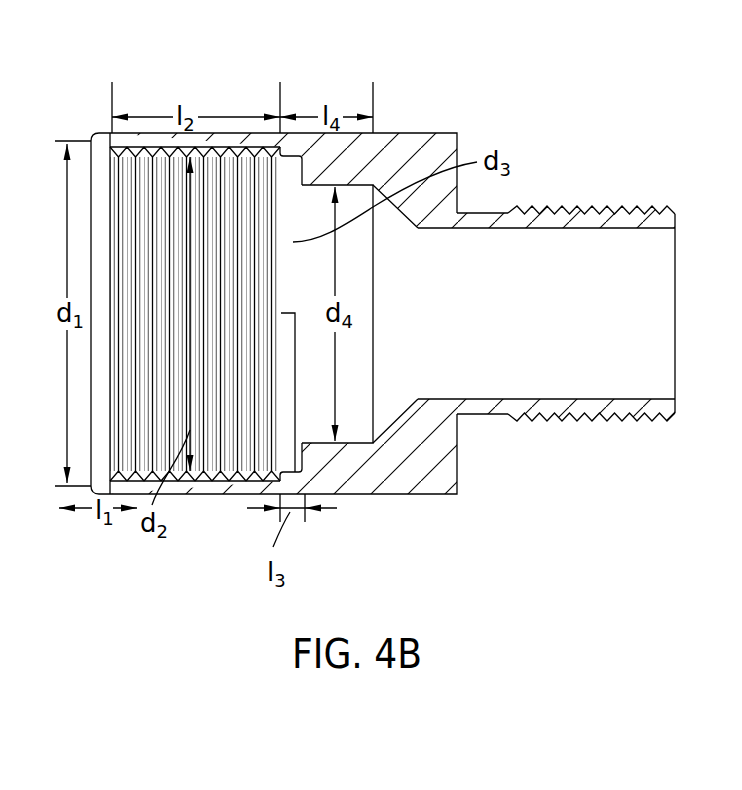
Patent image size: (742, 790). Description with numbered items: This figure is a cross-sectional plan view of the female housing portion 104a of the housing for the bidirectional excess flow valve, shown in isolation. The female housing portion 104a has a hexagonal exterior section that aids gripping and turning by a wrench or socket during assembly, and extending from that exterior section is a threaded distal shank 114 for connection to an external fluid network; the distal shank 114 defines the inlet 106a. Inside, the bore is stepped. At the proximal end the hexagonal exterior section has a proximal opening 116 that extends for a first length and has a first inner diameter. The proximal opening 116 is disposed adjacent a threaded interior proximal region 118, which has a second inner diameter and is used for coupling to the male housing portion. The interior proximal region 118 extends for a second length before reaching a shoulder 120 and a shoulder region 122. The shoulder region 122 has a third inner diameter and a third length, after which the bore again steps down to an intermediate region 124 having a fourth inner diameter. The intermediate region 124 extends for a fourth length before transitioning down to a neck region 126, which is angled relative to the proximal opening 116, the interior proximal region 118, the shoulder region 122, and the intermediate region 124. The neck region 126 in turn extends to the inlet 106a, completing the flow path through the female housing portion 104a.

The female housing portion 104a is at (408, 97).
The inlet 106a is at (675, 328).
The threaded distal shank 114 is at (567, 208).
The proximal opening 116 is at (92, 487).
The threaded interior proximal region 118 is at (197, 133).
The shoulder 120 is at (303, 490).
The shoulder region 122 is at (295, 195).
The intermediate region 124 is at (365, 447).
The neck region 126 is at (390, 390).